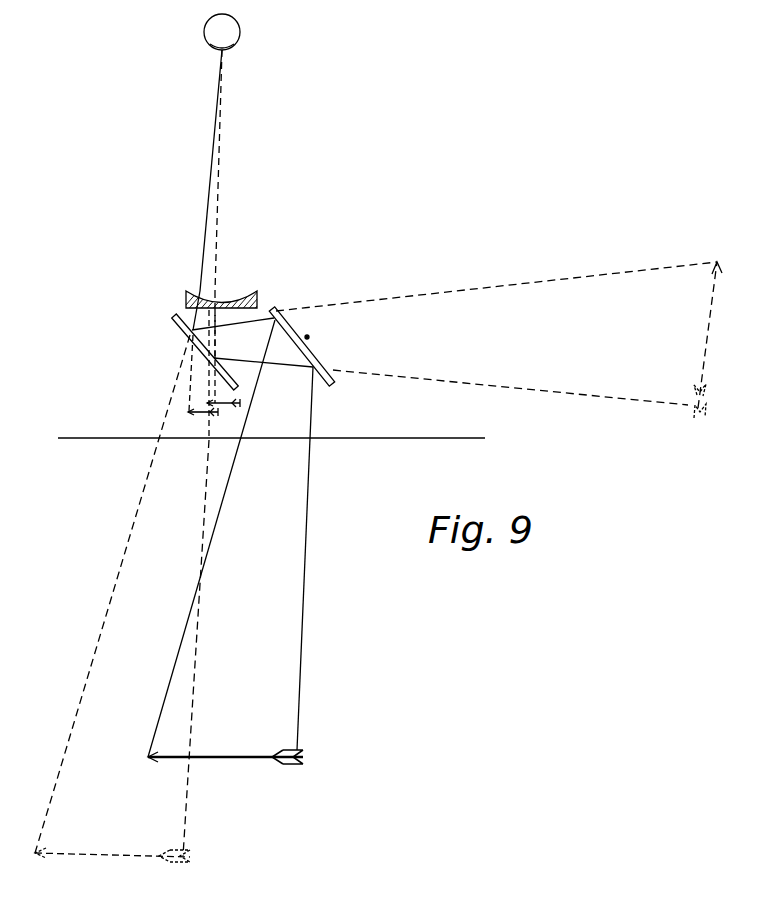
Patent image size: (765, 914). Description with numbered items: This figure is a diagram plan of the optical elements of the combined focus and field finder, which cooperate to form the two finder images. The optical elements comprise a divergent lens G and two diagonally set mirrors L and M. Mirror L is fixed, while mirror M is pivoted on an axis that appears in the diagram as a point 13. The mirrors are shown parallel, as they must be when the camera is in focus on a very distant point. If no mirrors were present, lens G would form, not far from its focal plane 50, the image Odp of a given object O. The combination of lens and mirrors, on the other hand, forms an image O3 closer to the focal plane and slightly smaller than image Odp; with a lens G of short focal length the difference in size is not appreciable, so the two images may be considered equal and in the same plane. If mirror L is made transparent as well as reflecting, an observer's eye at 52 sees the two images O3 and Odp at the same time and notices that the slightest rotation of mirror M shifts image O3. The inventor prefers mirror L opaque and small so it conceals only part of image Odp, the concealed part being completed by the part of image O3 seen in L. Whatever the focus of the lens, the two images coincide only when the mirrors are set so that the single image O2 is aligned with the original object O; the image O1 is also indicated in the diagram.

The observer's eye 52 is at (238, 42).
The axis of pivoted mirror 13 is at (309, 335).
The focal plane 50 is at (107, 438).
The divergent lens G is at (258, 297).
The fixed mirror L is at (173, 318).
The pivoted mirror M is at (318, 364).
The object O is at (222, 758).
The virtual image of object O1 is at (706, 345).
The single image O2 is at (82, 855).
The image formed by lens and mirrors O3 is at (206, 412).
The image formed by lens alone Odp is at (222, 405).